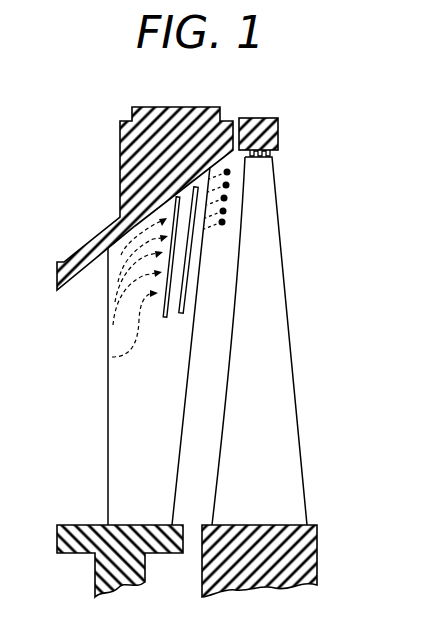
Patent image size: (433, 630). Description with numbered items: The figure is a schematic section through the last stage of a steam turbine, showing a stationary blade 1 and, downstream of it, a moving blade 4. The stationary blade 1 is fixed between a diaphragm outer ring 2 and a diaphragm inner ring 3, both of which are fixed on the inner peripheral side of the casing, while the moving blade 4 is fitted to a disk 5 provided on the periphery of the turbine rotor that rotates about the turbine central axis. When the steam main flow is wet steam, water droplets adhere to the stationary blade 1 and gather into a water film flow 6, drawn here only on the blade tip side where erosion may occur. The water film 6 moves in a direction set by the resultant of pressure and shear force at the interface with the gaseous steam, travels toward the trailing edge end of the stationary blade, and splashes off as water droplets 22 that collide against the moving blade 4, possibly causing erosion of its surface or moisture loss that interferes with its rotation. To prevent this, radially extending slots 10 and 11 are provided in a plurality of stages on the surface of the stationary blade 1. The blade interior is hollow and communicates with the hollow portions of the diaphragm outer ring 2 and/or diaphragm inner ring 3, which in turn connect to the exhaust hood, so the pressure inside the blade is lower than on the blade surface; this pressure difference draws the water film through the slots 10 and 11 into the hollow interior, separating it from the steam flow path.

The stationary blade 1 is at (118, 415).
The diaphragm outer ring 2 is at (128, 175).
The diaphragm inner ring 3 is at (107, 560).
The moving blade 4 is at (262, 240).
The disk 5 is at (305, 555).
The water film flow 6 is at (130, 347).
The slot 10 is at (165, 320).
The slot 11 is at (185, 283).
The water droplets 22 is at (226, 185).